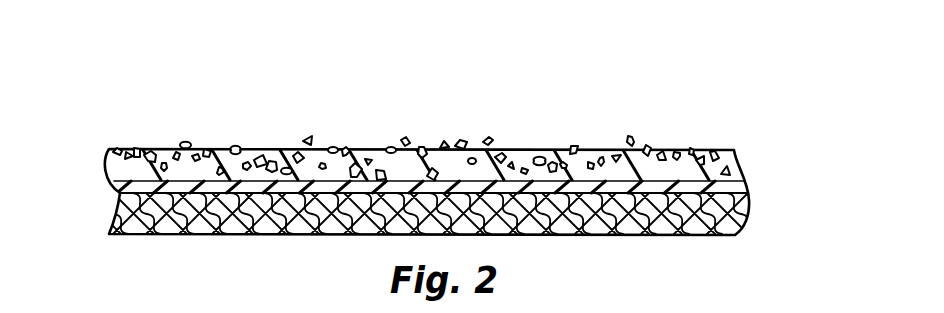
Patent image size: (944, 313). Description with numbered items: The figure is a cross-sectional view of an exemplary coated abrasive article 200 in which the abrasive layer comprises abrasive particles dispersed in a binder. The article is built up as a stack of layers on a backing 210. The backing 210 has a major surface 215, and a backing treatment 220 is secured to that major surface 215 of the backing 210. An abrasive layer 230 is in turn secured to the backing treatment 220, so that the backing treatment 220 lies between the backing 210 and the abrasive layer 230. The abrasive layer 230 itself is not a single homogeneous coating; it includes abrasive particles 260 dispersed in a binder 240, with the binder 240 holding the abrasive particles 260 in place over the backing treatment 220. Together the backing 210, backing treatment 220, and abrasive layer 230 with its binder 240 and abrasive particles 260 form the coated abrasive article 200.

The coated abrasive article 200 is at (668, 96).
The backing 210 is at (746, 223).
The major surface 215 is at (750, 207).
The backing treatment 220 is at (748, 186).
The abrasive layer 230 is at (95, 157).
The binder 240 is at (737, 173).
The abrasive particles 260 is at (547, 144).